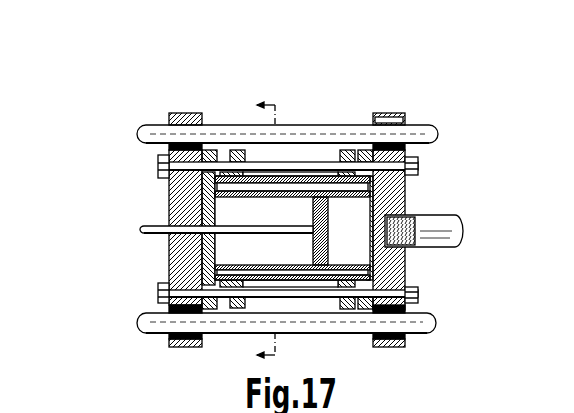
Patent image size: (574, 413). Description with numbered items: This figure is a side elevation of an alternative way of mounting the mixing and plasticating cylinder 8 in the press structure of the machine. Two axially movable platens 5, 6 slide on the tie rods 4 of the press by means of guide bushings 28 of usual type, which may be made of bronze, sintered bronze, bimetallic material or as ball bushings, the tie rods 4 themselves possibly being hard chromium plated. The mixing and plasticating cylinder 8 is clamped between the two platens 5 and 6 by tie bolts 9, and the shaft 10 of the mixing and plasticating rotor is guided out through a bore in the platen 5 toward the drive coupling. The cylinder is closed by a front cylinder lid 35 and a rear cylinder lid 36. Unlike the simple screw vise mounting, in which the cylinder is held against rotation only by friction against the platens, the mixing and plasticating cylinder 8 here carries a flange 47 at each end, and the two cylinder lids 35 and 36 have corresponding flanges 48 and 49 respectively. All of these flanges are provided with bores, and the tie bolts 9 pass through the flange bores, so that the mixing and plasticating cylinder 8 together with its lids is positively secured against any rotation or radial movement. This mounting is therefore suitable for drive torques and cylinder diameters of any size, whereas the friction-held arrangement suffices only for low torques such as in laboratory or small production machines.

The tie rod 4 is at (156, 143).
The axially movable platen 5 is at (183, 115).
The axially movable platen 6 is at (393, 115).
The mixing and plasticating cylinder 8 is at (287, 178).
The tie bolt 9 is at (168, 175).
The shaft 10 is at (157, 233).
The guide bushing 28 is at (407, 122).
The front cylinder lid 35 is at (210, 263).
The rear cylinder lid 36 is at (373, 265).
The flange 47 is at (235, 152).
The flange 48 is at (203, 306).
The flange 49 is at (372, 306).